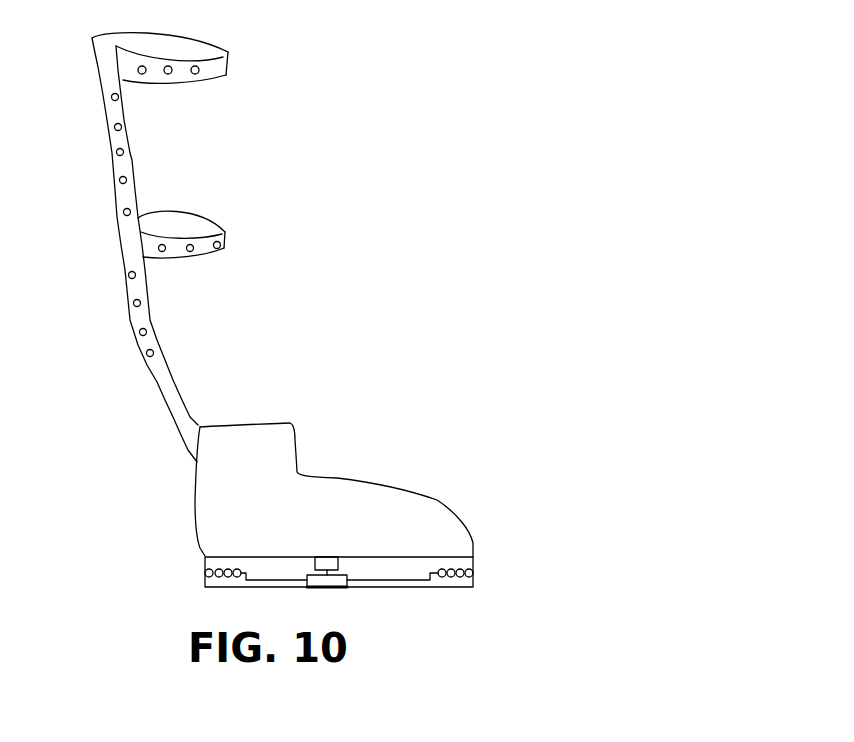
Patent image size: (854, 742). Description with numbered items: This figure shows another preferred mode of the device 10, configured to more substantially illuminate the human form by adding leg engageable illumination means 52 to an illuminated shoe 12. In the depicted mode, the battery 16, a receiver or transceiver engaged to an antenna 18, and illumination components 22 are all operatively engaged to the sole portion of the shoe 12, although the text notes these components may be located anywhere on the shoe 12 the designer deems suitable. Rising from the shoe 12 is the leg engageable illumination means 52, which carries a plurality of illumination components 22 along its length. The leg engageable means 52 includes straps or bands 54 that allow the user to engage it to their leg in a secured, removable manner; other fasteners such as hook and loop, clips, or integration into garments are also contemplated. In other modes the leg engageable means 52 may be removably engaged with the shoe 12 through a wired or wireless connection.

The device 10 is at (460, 158).
The shoe 12 is at (198, 522).
The battery 16 is at (329, 555).
The antenna 18 is at (337, 588).
The illumination components 22 is at (170, 73).
The leg engageable illumination means 52 is at (122, 255).
The straps or bands 54 is at (225, 58).